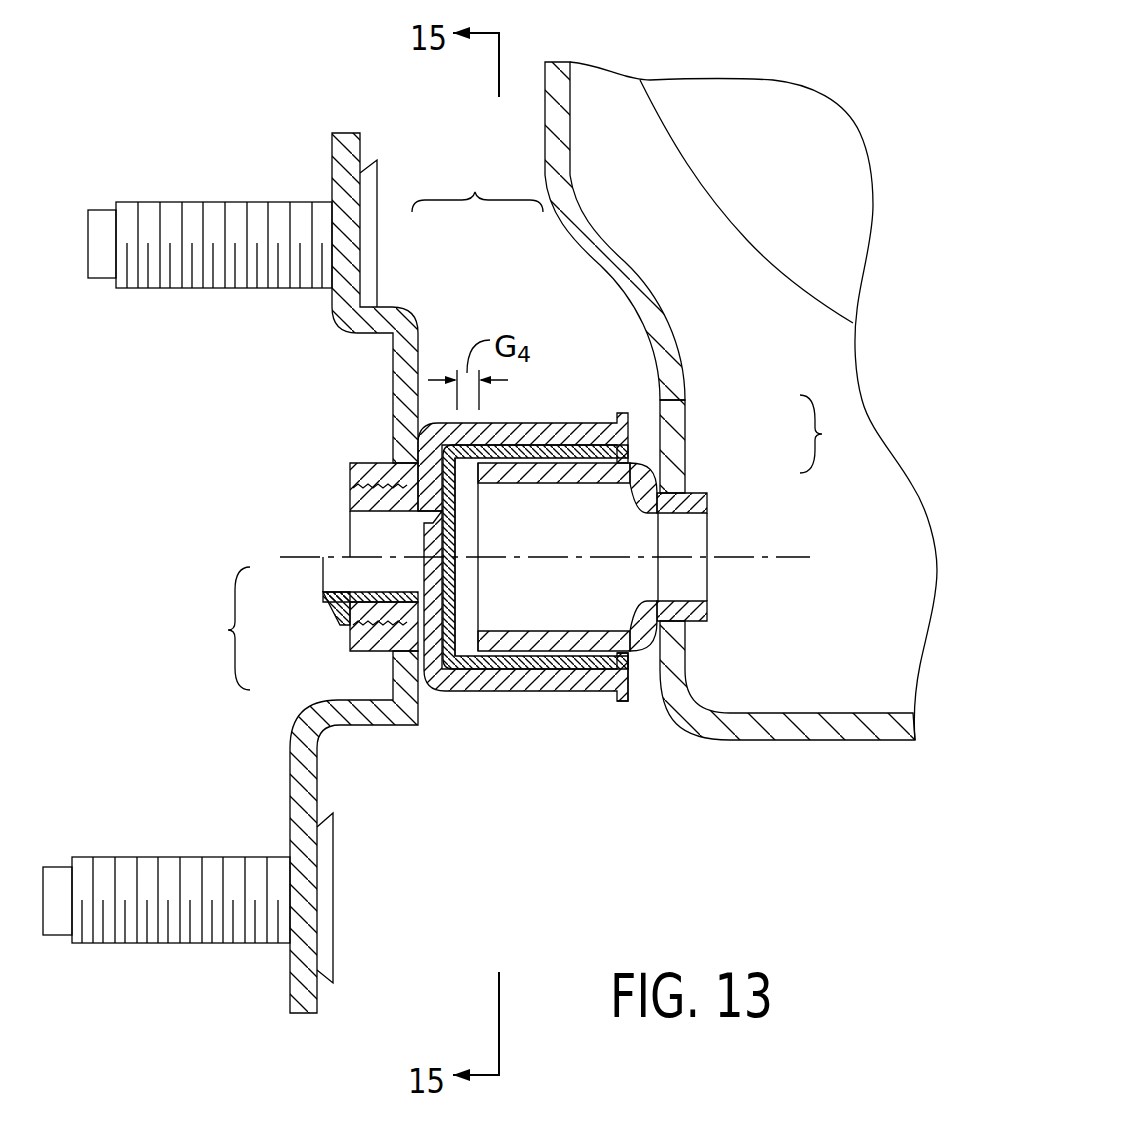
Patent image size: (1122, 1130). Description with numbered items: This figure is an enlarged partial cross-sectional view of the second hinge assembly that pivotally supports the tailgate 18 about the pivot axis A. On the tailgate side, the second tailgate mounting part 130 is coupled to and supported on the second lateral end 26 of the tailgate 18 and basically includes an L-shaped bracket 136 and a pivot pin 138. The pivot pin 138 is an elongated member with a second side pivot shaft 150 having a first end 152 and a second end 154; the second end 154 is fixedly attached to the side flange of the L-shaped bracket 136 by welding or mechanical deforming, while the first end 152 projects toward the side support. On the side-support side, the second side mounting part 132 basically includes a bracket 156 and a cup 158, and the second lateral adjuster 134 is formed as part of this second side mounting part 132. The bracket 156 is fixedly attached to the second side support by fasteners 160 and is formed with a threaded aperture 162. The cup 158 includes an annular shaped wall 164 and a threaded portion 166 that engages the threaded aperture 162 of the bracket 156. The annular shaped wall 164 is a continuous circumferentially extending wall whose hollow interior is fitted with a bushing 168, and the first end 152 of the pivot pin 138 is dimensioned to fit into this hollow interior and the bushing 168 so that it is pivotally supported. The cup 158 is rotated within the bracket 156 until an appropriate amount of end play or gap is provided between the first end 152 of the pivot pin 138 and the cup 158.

The tailgate 18 is at (771, 108).
The second lateral end 26 is at (678, 104).
The second tailgate mounting part 130 is at (836, 434).
The second side mounting part 132 is at (477, 182).
The second lateral adjuster 134 is at (212, 628).
The L-shaped bracket 136 is at (697, 413).
The pivot pin 138 is at (660, 471).
The second side pivot shaft 150 is at (530, 642).
The first end 152 is at (478, 480).
The second end 154 is at (697, 503).
The bracket 156 is at (427, 300).
The cup 158 is at (560, 423).
The fasteners 160 is at (177, 290).
The threaded aperture 162 is at (362, 598).
The annular shaped wall 164 is at (455, 691).
The threaded portion 166 is at (393, 627).
The bushing 168 is at (623, 693).
The pivot axis A is at (783, 560).